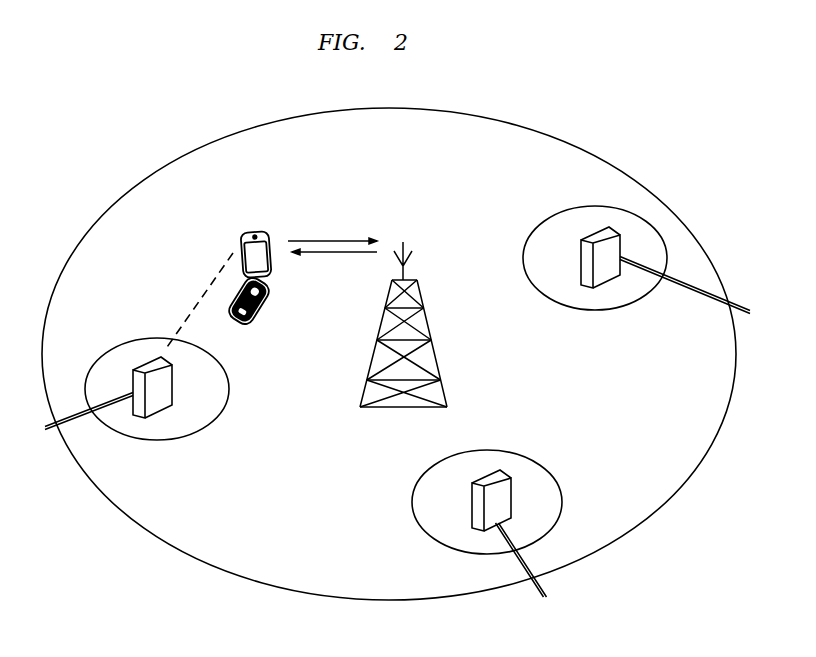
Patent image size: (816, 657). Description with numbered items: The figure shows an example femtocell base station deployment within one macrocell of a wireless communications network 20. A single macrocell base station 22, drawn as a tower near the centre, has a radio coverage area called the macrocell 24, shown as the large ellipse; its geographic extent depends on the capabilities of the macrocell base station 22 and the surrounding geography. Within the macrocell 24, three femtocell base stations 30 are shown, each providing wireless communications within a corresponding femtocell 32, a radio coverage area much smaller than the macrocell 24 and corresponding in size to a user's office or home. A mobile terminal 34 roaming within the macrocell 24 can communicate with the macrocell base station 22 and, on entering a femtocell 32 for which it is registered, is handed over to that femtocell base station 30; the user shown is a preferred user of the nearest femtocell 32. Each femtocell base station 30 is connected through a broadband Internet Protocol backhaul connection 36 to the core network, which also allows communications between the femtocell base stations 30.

The wireless communication system 20 is at (122, 156).
The macrocell base station 22 is at (424, 306).
The macrocell 24 is at (560, 140).
The femtocell base station 30 is at (175, 392).
The femtocell 32 is at (228, 376).
The mobile terminal 34 is at (266, 234).
The backhaul connection 36 is at (47, 423).